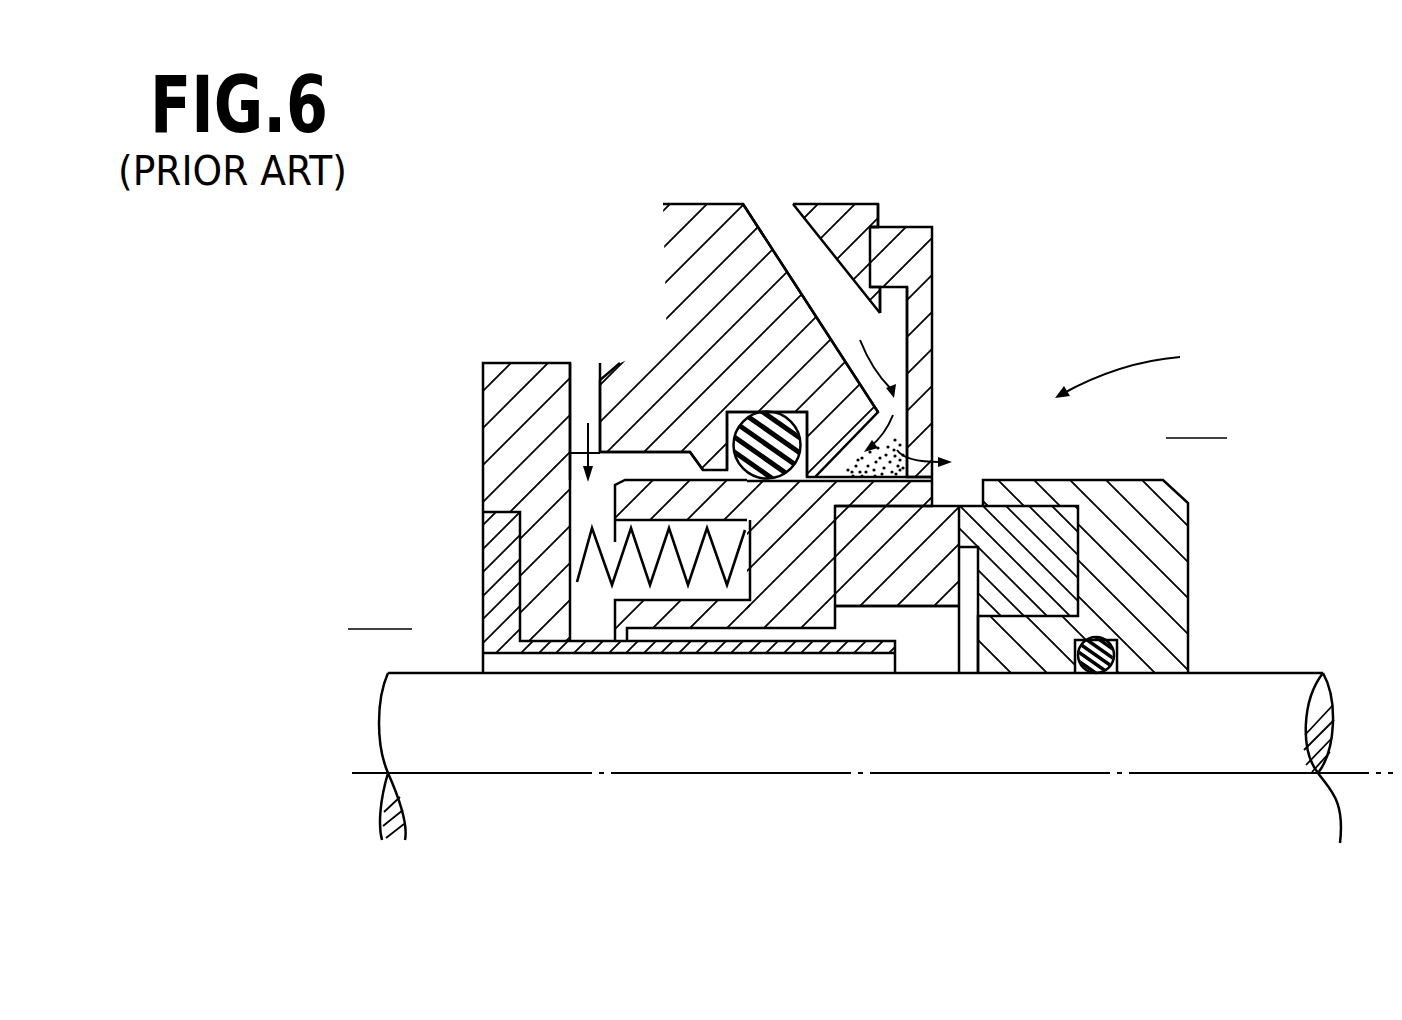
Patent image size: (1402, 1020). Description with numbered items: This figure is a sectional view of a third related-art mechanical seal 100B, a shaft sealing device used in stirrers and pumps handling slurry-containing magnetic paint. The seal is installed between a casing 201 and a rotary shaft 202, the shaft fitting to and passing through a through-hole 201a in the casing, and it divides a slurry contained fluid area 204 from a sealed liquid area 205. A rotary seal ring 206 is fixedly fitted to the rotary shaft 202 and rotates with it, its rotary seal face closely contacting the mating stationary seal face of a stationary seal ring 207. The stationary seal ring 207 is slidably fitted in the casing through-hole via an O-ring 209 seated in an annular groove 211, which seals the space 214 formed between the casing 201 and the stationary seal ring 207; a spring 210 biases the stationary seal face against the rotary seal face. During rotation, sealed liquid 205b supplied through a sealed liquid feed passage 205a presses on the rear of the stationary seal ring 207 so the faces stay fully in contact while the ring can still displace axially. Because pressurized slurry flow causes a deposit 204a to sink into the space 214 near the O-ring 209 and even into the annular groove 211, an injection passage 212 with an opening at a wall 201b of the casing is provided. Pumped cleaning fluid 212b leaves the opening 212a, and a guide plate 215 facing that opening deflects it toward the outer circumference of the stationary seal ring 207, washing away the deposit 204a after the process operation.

The mechanical seal 100B is at (1264, 354).
The casing 201 is at (685, 243).
The through-hole 201a is at (625, 457).
The wall 201b is at (880, 212).
The rotary shaft 202 is at (417, 723).
The slurry contained fluid area 204 is at (730, 440).
The deposit 204a is at (850, 481).
The sealed liquid area 205 is at (730, 440).
The sealed liquid feed passage 205a is at (583, 405).
The sealed liquid 205b is at (570, 443).
The rotary seal ring 206 is at (1078, 556).
The stationary seal ring 207 is at (925, 573).
The O-ring 209 is at (770, 445).
The spring 210 is at (630, 580).
The annular groove 211 is at (727, 412).
The injection passage 212 is at (780, 221).
The opening 212a is at (932, 312).
The cleaning fluid 212b is at (930, 447).
The space 214 is at (810, 485).
The guide plate 215 is at (932, 332).